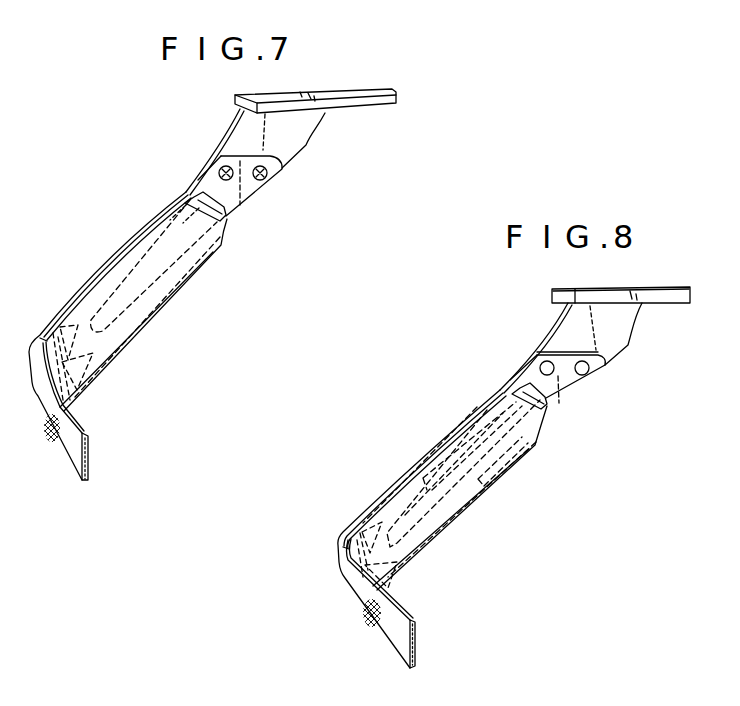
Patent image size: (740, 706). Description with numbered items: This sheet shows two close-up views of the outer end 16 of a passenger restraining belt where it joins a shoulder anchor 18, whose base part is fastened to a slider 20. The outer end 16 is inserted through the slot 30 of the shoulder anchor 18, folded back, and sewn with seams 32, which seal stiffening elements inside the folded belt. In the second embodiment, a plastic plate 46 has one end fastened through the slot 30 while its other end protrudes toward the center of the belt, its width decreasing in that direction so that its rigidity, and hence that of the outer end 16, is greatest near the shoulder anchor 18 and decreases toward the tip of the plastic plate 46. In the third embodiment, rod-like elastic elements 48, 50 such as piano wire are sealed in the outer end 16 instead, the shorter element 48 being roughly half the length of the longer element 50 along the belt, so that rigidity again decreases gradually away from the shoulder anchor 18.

In FIG. 7, the outer end 16 is at (163, 312).
In FIG. 8, the outer end 16 is at (410, 566).
In FIG. 7, the shoulder anchor 18 is at (207, 185).
In FIG. 8, the shoulder anchor 18 is at (522, 380).
In FIG. 7, the slider 20 is at (303, 139).
In FIG. 8, the slider 20 is at (617, 343).
In FIG. 7, the slot 30 is at (226, 222).
In FIG. 8, the slot 30 is at (548, 403).
In FIG. 7, the seams 32 is at (128, 343).
In FIG. 8, the seams 32 is at (472, 504).
In FIG. 7, the plastic plate 46 is at (130, 240).
In FIG. 8, the rod-like elastic element 48 is at (450, 440).
In FIG. 8, the rod-like elastic element 50 is at (428, 513).